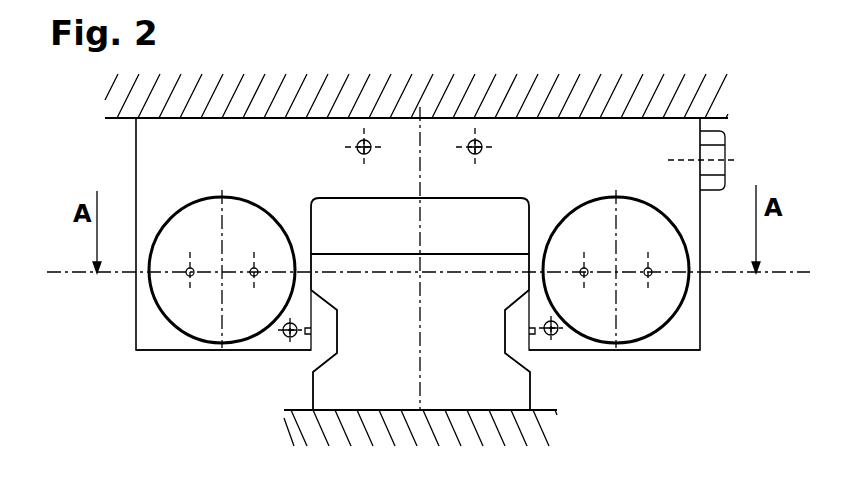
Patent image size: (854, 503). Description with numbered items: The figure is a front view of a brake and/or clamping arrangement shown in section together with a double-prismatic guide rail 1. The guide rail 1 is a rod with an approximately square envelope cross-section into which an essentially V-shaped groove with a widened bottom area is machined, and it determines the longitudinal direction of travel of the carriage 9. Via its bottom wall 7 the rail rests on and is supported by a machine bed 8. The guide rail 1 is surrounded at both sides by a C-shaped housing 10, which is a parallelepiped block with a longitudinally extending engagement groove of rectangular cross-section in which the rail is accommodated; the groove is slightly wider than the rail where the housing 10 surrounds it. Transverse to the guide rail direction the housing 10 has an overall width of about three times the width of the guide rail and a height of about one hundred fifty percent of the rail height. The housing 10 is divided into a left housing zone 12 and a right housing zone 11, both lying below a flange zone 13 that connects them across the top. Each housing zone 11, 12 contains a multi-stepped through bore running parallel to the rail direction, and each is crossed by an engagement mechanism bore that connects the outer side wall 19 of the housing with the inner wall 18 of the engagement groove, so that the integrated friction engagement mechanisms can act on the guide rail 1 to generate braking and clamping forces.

The guide rail 1 is at (387, 382).
The bottom wall 7 is at (437, 410).
The machine bed 8 is at (514, 421).
The carriage 9 is at (443, 97).
The housing 10 is at (136, 344).
The right housing zone 11 is at (684, 329).
The left housing zone 12 is at (152, 318).
The flange zone 13 is at (400, 137).
The inner wall 18 is at (531, 318).
The outer side wall 19 is at (700, 293).